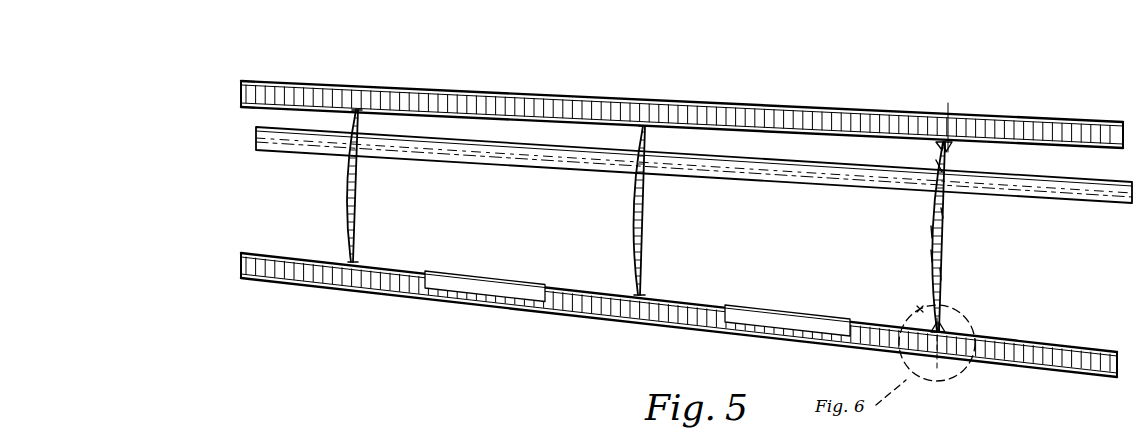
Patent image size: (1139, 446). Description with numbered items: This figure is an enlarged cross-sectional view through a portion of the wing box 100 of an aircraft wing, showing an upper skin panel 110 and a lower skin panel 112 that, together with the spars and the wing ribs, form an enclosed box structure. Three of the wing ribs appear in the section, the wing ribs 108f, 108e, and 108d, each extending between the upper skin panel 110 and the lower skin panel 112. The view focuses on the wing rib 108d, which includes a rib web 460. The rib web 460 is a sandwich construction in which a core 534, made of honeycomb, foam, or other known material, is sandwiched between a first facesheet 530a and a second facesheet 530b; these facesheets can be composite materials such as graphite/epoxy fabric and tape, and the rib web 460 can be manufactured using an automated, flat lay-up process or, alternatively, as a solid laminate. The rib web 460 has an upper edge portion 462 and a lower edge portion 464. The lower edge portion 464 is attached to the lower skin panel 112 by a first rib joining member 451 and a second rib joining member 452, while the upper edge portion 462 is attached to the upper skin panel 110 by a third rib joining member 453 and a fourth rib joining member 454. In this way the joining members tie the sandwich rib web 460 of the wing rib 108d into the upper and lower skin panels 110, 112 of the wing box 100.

The wing box 100 is at (236, 29).
The upper skin panel 110 is at (988, 116).
The lower skin panel 112 is at (995, 360).
The wing rib 108f is at (348, 197).
The wing rib 108e is at (633, 219).
The wing rib 108d is at (943, 236).
The third rib joining member 453 is at (936, 143).
The fourth rib joining member 454 is at (950, 146).
The upper edge portion 462 is at (932, 164).
The core 534 is at (946, 213).
The second facesheet 530b is at (931, 232).
The rib web 460 is at (931, 256).
The first facesheet 530a is at (942, 274).
The lower edge portion 464 is at (920, 306).
The first rib joining member 451 is at (931, 332).
The second rib joining member 452 is at (946, 332).